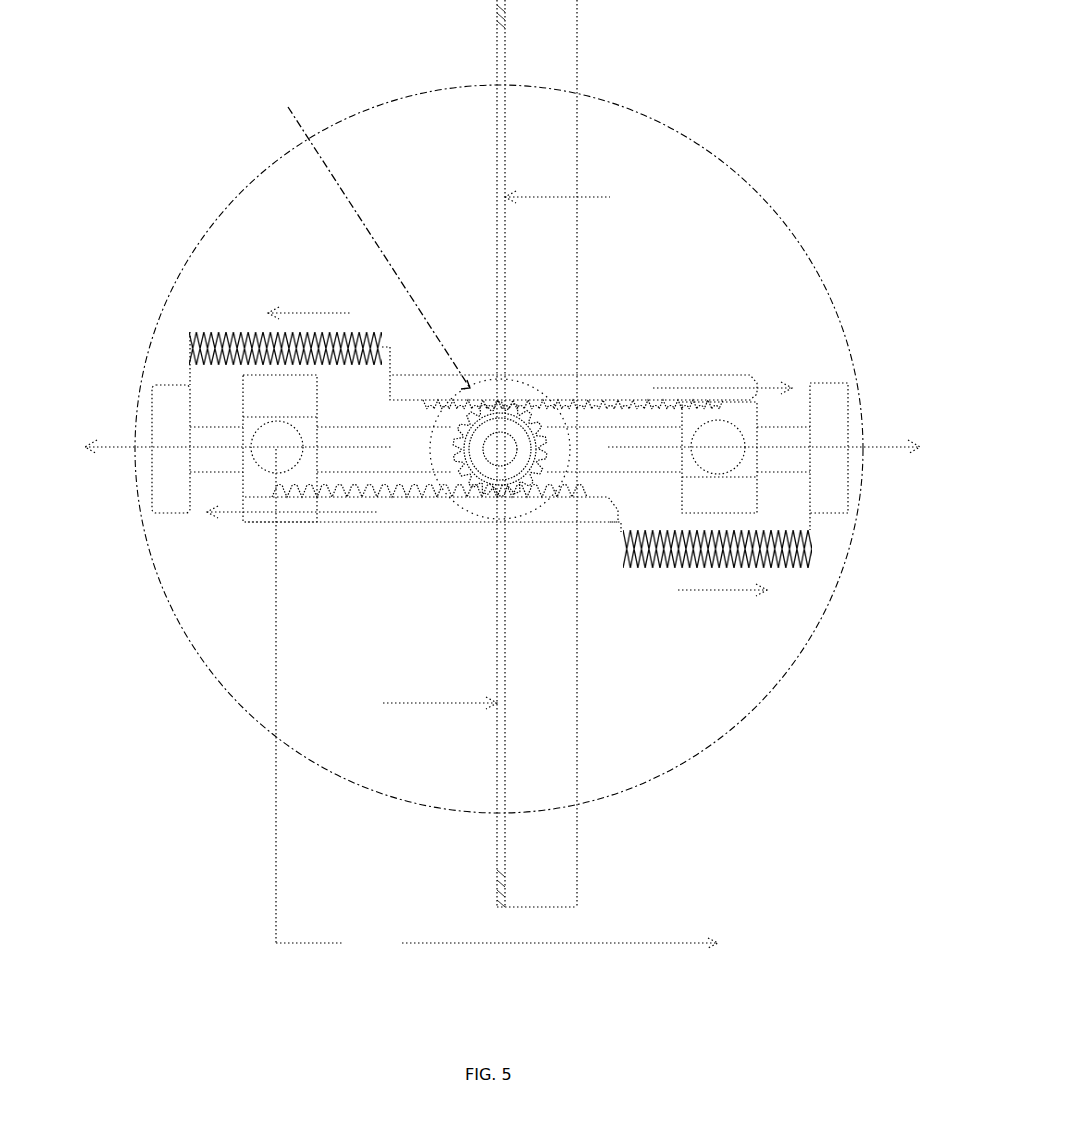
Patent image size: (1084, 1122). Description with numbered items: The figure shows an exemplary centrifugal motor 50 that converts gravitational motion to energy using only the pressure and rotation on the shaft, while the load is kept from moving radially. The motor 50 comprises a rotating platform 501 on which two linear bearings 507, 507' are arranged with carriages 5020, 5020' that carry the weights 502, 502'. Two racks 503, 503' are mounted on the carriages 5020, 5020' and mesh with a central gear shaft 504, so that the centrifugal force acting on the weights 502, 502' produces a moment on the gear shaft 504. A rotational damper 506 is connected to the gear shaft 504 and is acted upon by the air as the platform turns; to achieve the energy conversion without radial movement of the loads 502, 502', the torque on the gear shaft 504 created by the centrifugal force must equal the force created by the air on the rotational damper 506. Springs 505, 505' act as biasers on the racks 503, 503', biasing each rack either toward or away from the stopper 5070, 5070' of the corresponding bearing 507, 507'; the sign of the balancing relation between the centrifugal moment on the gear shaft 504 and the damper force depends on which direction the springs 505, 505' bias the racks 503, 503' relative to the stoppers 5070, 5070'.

The motor 50 is at (883, 332).
The rotating platform 501 is at (715, 141).
The weight 502 is at (235, 266).
The weight 502' is at (795, 270).
The rack 503 is at (436, 698).
The rack 503' is at (598, 226).
The gear shaft 504 is at (477, 382).
The spring 505 is at (265, 295).
The spring 505' is at (768, 608).
The rotational damper 506 is at (498, 832).
The linear bearing 507 is at (248, 516).
The linear bearing 507' is at (740, 472).
The carriage 5020 is at (280, 448).
The carriage 5020' is at (719, 457).
The stopper 5070 is at (133, 411).
The stopper 5070' is at (886, 443).